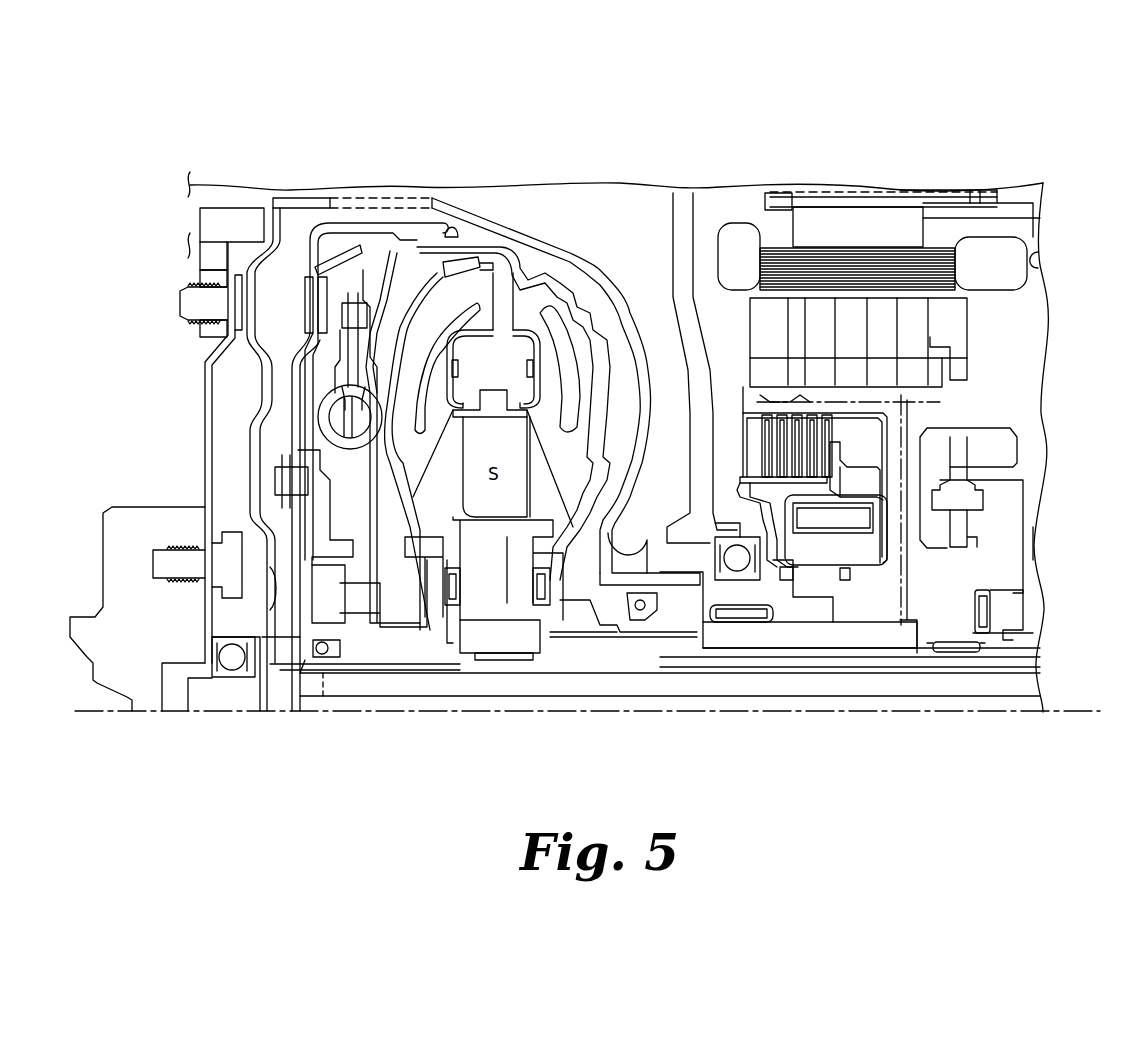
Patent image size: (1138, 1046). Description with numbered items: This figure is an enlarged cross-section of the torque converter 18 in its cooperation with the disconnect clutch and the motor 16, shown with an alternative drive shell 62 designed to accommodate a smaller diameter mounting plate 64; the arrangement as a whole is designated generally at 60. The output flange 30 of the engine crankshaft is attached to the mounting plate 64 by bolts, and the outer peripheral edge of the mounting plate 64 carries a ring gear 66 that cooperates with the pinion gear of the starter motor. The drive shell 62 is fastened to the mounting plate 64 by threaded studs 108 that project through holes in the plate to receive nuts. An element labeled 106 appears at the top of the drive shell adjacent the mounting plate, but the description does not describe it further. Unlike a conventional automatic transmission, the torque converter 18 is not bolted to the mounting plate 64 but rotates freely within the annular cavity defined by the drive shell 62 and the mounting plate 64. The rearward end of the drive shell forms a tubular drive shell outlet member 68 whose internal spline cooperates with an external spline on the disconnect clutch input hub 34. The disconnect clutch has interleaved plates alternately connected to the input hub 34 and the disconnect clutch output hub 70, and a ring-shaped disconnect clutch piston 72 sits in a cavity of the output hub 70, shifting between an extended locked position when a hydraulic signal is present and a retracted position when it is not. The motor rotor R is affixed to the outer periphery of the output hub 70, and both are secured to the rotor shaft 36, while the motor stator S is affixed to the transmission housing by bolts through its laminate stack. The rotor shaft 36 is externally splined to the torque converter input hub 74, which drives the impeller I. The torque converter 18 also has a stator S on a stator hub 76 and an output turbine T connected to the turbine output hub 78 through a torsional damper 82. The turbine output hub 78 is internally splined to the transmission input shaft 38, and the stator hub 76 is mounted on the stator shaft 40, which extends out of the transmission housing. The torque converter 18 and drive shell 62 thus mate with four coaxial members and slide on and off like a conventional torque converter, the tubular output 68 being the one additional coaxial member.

The clutch assembly 60 is at (593, 88).
The ring gear 66 is at (238, 208).
The strip 106 is at (283, 205).
The drive shell 62 is at (312, 196).
The torsional damper 82 is at (388, 330).
The torque converter 18 is at (520, 240).
The motor 16 is at (901, 264).
The threaded studs 108 is at (180, 300).
The mounting plate 64 is at (203, 395).
The output flange 30 is at (160, 505).
The disconnect clutch output hub 70 is at (918, 482).
The turbine output hub 78 is at (375, 650).
The stator hub 76 is at (498, 640).
The torque converter input hub 74 is at (605, 627).
The tubular drive shell outlet member 68 is at (655, 575).
The disconnect clutch input hub 34 is at (695, 597).
The rotor shaft 36 is at (752, 637).
The disconnect clutch piston 72 is at (858, 575).
The transmission input shaft 38 is at (945, 686).
The stator shaft 40 is at (1000, 660).
The stator S is at (863, 230).
The rotor R is at (967, 342).
The turbine T is at (410, 456).
The impeller I is at (579, 461).